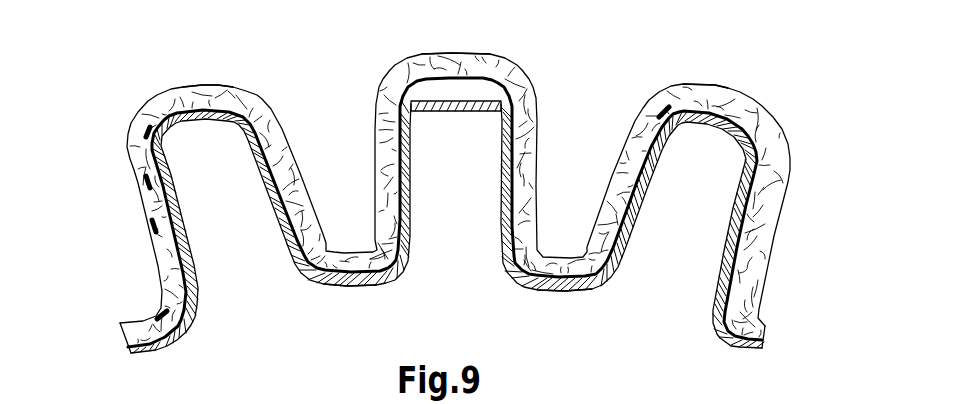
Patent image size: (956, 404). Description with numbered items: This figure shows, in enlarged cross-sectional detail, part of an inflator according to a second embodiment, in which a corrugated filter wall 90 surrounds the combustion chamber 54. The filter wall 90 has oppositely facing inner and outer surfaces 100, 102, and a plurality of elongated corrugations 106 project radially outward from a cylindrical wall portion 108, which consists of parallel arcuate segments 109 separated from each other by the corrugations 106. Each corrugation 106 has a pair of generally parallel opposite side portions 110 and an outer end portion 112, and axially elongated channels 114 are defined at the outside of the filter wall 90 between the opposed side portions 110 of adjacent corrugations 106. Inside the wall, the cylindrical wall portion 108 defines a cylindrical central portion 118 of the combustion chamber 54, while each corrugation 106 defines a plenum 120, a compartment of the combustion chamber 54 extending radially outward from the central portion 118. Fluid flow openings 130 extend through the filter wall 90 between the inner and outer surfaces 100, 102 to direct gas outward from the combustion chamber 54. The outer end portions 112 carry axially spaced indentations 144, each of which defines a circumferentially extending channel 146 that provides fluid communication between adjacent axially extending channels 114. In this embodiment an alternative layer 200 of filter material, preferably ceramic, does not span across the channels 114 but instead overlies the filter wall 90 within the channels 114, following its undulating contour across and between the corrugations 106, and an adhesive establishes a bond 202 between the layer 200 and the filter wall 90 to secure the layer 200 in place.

The combustion chamber 54 is at (478, 315).
The filter wall 90 is at (200, 345).
The inner surface 100 is at (444, 184).
The outer surface 102 is at (215, 103).
The corrugation 106 is at (144, 180).
The cylindrical wall portion 108 is at (158, 313).
The arcuate segment 109 is at (166, 352).
The side portion 110 is at (185, 255).
The outer end portion 112 is at (178, 100).
The axially elongated channel 114 is at (350, 137).
The cylindrical central portion 118 is at (432, 285).
The plenum 120 is at (255, 252).
The fluid flow opening 130 is at (151, 226).
The indentation 144 is at (450, 102).
The circumferentially extending channel 146 is at (395, 95).
The layer of filter material 200 is at (140, 103).
The bond 202 is at (142, 132).